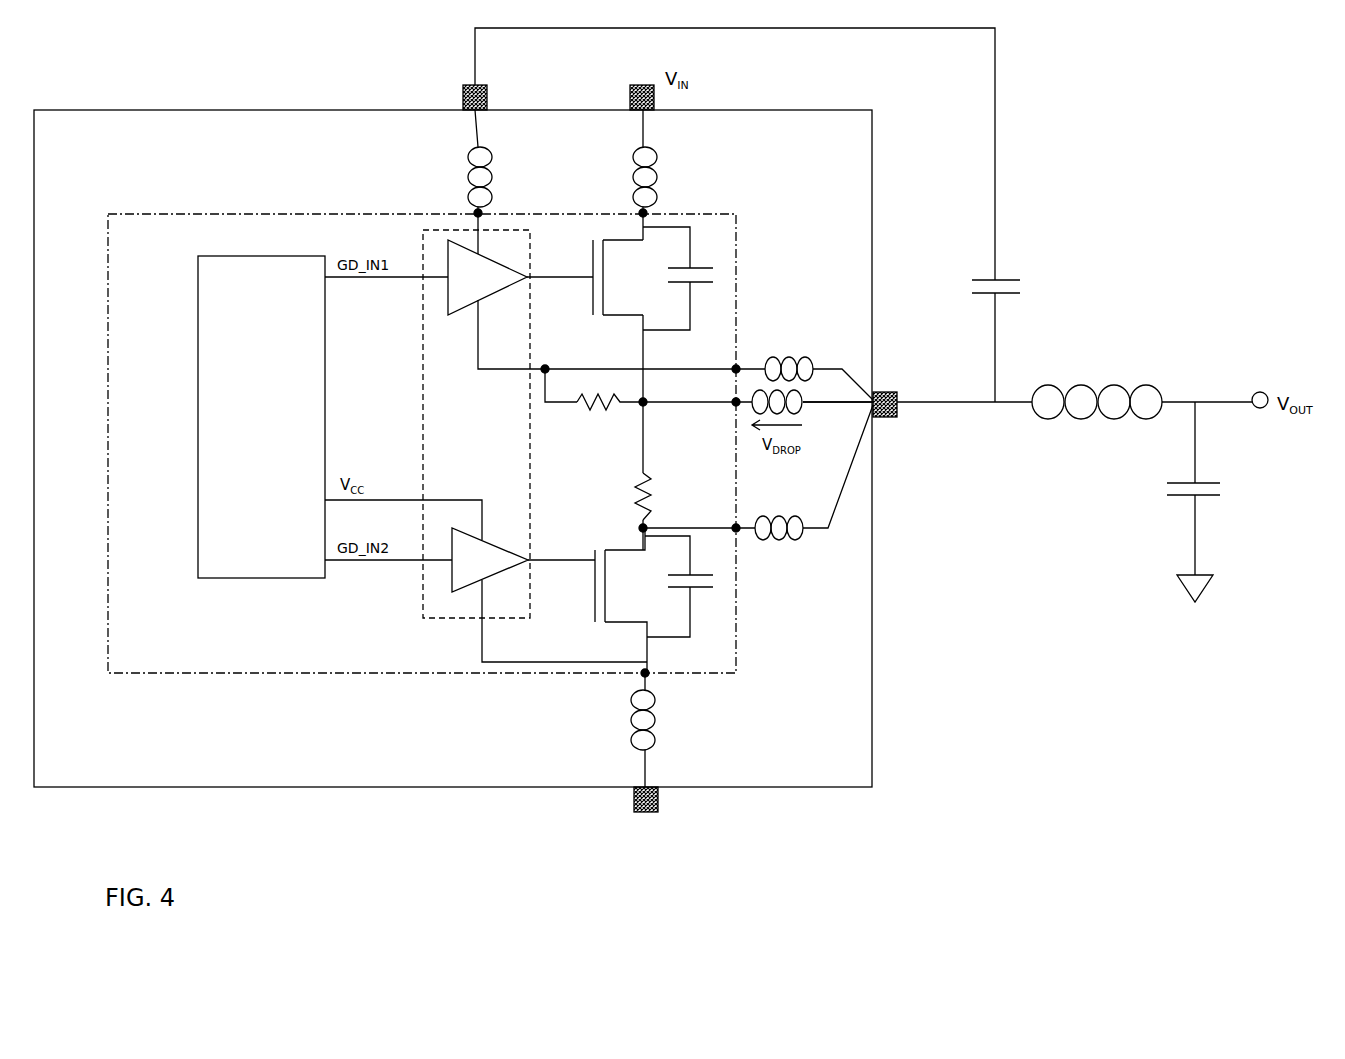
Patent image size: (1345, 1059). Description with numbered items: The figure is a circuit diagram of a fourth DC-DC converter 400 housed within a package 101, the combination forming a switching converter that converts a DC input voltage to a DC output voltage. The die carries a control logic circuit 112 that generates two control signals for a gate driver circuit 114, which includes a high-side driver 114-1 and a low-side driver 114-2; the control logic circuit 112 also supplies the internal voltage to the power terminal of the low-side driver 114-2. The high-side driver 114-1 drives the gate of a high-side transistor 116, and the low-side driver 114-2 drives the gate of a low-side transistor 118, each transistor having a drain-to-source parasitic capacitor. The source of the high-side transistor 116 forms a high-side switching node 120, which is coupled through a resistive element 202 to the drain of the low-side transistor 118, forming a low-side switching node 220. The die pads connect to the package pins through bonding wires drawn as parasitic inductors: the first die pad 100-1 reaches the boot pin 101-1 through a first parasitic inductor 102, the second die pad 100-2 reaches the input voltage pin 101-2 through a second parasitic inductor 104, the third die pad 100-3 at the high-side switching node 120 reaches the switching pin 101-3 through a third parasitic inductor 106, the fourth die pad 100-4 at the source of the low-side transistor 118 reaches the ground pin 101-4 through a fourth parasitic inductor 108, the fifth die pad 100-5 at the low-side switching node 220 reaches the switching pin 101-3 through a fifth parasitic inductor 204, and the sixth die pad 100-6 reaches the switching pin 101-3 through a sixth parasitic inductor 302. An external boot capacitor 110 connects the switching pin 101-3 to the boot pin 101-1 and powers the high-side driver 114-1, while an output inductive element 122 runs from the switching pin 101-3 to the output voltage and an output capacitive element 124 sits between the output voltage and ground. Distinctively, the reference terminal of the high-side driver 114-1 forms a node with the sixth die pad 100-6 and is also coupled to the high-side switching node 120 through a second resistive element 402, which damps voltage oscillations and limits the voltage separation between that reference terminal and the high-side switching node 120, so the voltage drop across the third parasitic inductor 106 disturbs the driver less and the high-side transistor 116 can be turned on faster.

The fourth DC-DC converter 400 is at (135, 214).
The package 101 is at (873, 715).
The boot pin 101-1 is at (463, 92).
The input voltage pin 101-2 is at (630, 92).
The switching pin 101-3 is at (893, 392).
The ground pin 101-4 is at (658, 805).
The first parasitic inductor 102 is at (485, 175).
The second parasitic inductor 104 is at (650, 178).
The fourth parasitic inductor 108 is at (635, 735).
The boot capacitor 110 is at (1020, 285).
The first die pad 100-1 is at (476, 211).
The second die pad 100-2 is at (645, 212).
The third die pad 100-3 is at (736, 404).
The fourth die pad 100-4 is at (648, 676).
The fifth die pad 100-5 is at (737, 530).
The sixth die pad 100-6 is at (737, 368).
The control logic circuit 112 is at (261, 417).
The gate driver circuit 114 is at (422, 600).
The high-side driver 114-1 is at (520, 277).
The low-side driver 114-2 is at (523, 560).
The high-side transistor 116 is at (593, 297).
The low-side transistor 118 is at (605, 588).
The high-side switching node 120 is at (643, 404).
The output inductive element 122 is at (1053, 415).
The output capacitive element 124 is at (1165, 487).
The resistive element 202 is at (640, 495).
The fifth parasitic inductor 204 is at (795, 518).
The low-side switching node 220 is at (640, 528).
The sixth parasitic inductor 302 is at (808, 358).
The second resistive element 402 is at (585, 412).
The third parasitic inductor 106 is at (798, 412).